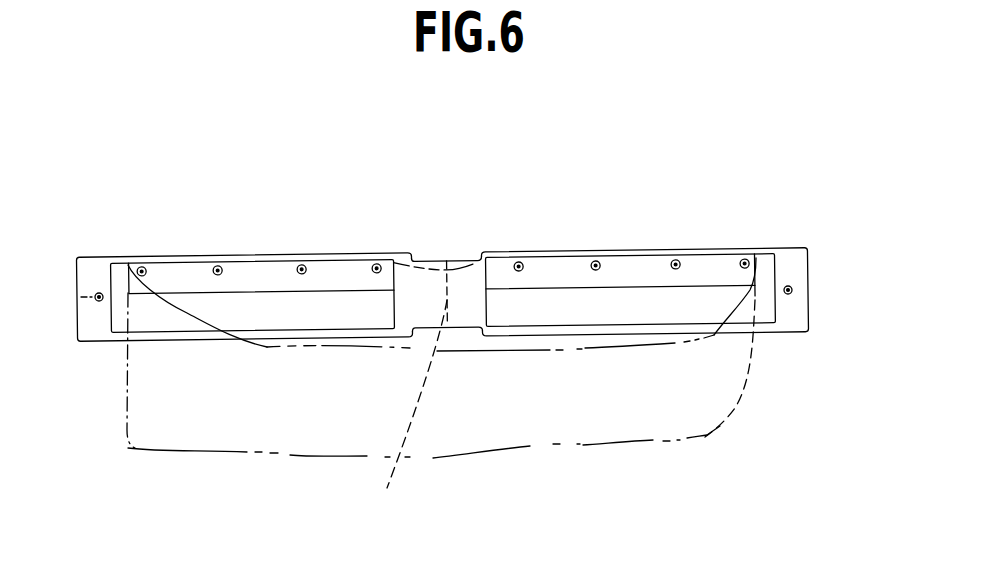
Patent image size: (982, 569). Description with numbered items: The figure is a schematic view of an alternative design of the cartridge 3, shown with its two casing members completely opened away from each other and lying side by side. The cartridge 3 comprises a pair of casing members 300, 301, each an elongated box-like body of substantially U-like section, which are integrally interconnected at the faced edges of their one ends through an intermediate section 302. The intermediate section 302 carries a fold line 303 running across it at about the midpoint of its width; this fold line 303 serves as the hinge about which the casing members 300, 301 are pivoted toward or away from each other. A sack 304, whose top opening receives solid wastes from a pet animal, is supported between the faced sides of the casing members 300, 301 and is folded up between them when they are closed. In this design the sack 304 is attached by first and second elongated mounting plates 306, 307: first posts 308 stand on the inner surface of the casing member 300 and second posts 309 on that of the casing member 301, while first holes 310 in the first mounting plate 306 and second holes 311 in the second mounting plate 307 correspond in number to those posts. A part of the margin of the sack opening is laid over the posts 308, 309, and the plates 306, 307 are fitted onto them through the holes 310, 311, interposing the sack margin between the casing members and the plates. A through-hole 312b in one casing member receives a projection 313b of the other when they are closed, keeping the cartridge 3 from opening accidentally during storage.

The cartridge 3 is at (471, 247).
The casing member 300 is at (180, 250).
The casing member 301 is at (633, 246).
The intermediate section 302 is at (437, 257).
The fold line 303 is at (441, 404).
The sack 304 is at (539, 456).
The first mounting plate 306 is at (246, 297).
The second mounting plate 307 is at (713, 290).
The first posts 308 is at (142, 263).
The second posts 309 is at (519, 262).
The first holes 310 is at (218, 263).
The second holes 311 is at (596, 262).
The through-hole 312b is at (96, 299).
The projection 313b is at (793, 290).